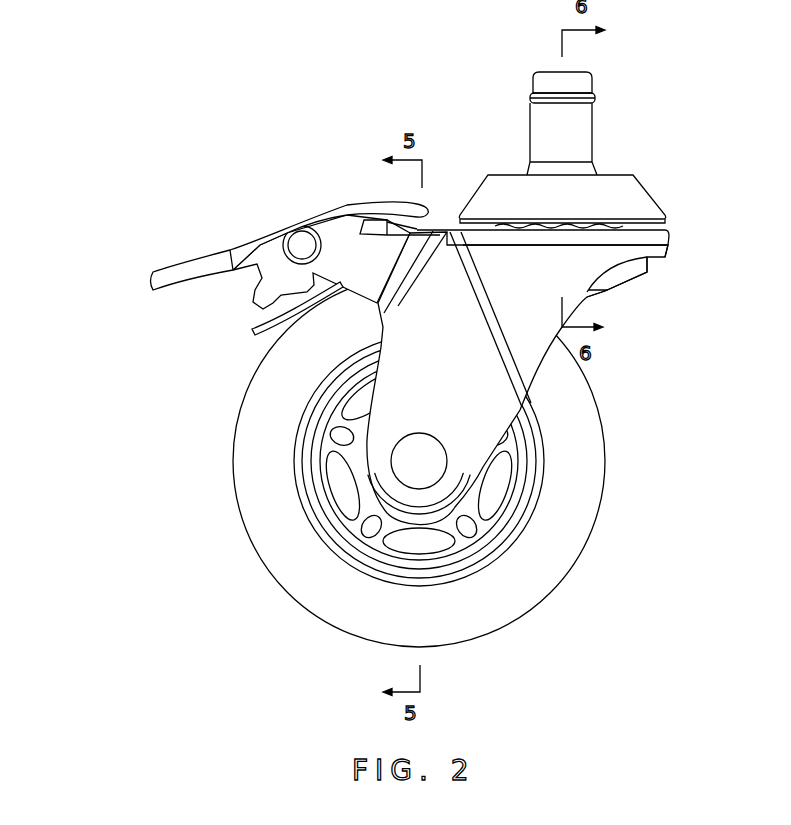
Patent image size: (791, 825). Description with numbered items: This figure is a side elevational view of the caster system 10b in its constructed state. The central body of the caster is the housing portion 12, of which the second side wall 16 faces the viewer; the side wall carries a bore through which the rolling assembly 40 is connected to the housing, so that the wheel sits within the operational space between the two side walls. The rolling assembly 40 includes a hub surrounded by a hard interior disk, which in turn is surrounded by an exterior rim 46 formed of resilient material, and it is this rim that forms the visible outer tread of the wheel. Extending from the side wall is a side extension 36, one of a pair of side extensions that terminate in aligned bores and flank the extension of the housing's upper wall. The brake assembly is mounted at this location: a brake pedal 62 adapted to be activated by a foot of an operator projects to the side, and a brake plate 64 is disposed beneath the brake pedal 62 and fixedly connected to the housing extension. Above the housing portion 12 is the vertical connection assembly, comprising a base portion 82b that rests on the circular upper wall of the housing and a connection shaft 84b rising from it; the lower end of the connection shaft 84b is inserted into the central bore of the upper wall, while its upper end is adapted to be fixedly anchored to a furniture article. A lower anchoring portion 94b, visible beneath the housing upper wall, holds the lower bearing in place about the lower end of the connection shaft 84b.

The caster system 10b is at (100, 252).
The housing portion 12 is at (549, 366).
The second side wall 16 is at (473, 375).
The side extension 36 is at (343, 252).
The rolling assembly 40 is at (226, 458).
The exterior rim 46 is at (277, 517).
The brake pedal 62 is at (243, 237).
The brake plate 64 is at (260, 325).
The base portion 82b is at (625, 205).
The connection shaft 84b is at (565, 140).
The lower anchoring portion 94b is at (617, 282).